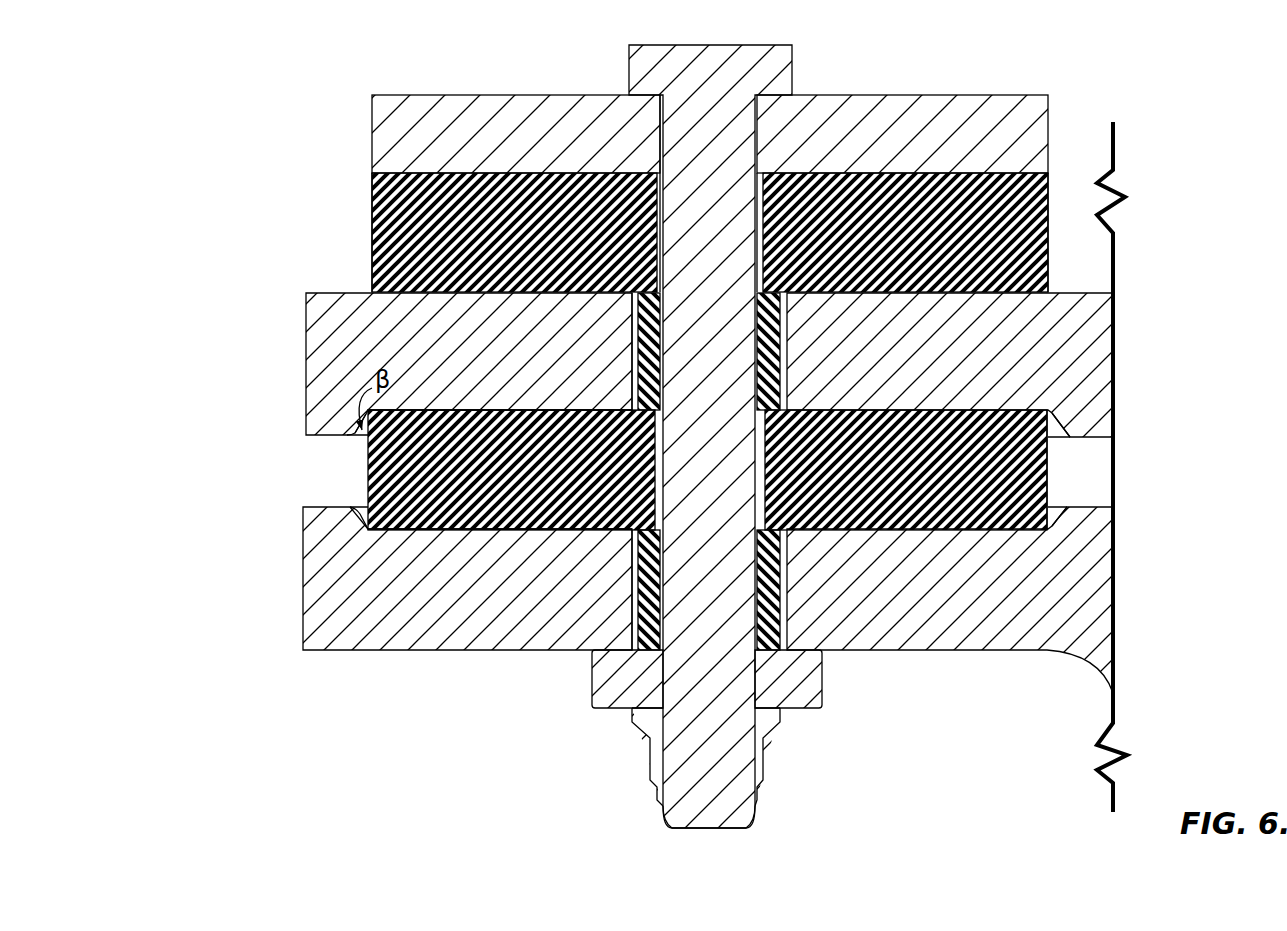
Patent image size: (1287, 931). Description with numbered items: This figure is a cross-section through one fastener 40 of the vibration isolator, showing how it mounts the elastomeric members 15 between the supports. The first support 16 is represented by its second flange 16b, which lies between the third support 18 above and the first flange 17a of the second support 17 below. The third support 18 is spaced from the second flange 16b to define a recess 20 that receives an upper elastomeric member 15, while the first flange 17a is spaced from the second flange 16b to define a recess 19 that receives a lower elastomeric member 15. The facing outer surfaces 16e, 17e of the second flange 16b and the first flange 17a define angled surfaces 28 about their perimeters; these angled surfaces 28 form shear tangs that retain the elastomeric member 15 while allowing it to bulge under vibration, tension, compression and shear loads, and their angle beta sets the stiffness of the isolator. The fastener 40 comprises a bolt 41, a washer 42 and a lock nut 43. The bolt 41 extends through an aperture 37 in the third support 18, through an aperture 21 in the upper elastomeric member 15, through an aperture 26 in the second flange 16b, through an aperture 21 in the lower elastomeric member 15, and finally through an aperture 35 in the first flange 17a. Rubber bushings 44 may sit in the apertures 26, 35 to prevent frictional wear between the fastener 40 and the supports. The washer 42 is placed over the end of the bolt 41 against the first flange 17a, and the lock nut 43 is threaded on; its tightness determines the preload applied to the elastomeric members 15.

The elastomeric member 15 is at (372, 240).
The first support 16 is at (317, 378).
The second flange 16b is at (1108, 323).
The outer surface 16e is at (510, 408).
The second support 17 is at (320, 588).
The first flange 17a is at (1088, 603).
The outer surface 17e is at (455, 535).
The third support 18 is at (962, 113).
The recess 19 is at (365, 505).
The recess 20 is at (1048, 293).
The aperture 21 is at (1113, 469).
The aperture 26 is at (633, 342).
The angled surface 28 is at (360, 428).
The aperture 35 is at (633, 600).
The aperture 37 is at (661, 133).
The fastener 40 is at (727, 77).
The bolt 41 is at (722, 808).
The washer 42 is at (592, 702).
The lock nut 43 is at (780, 765).
The rubber bushing 44 is at (1047, 483).